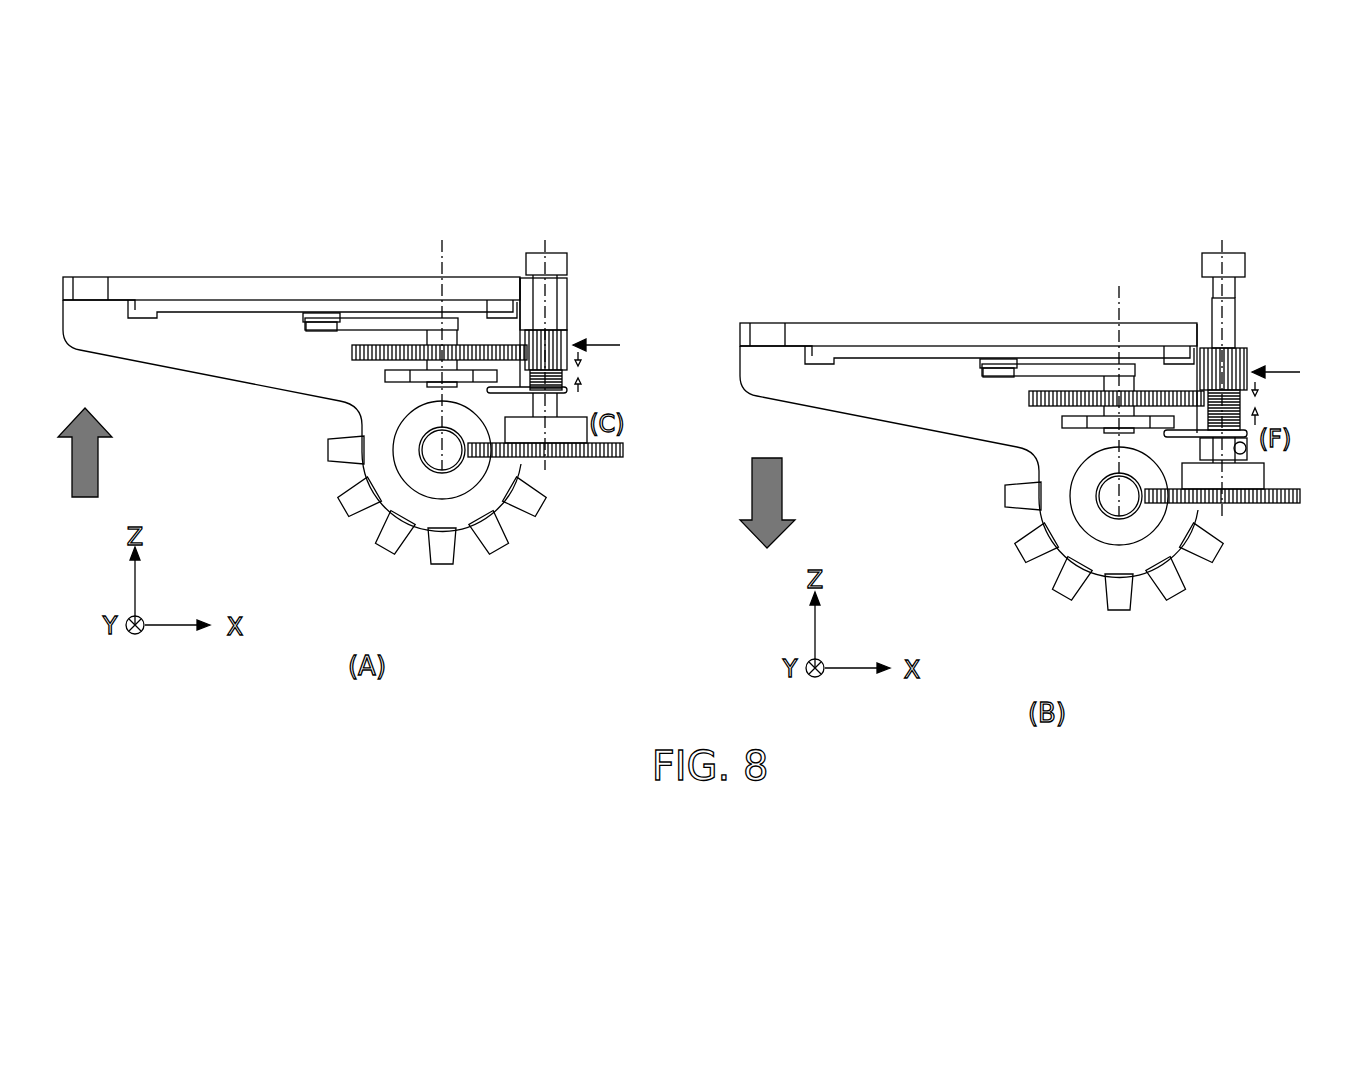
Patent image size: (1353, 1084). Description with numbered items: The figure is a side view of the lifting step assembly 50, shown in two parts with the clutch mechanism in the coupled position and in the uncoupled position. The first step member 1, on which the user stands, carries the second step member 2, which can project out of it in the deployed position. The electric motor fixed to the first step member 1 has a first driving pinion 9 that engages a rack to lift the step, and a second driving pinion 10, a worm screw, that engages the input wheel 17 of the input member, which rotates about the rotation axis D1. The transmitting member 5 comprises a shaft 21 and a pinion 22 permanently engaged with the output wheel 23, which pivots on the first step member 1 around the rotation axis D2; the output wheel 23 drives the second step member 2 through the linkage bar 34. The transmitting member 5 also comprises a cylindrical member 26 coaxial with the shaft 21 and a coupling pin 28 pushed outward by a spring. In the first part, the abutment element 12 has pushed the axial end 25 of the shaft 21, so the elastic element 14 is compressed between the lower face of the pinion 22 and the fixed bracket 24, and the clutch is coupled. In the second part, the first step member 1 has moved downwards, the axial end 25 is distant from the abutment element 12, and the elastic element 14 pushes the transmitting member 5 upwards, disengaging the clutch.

The first step member 1 is at (197, 287).
The second step member 2 is at (292, 303).
The transmitting member 5 is at (947, 362).
The first driving pinion 9 is at (357, 496).
The second driving pinion 10 is at (442, 449).
The abutment element 12 is at (556, 262).
The elastic element 14 is at (578, 386).
The input wheel 17 is at (608, 457).
The shaft 21 is at (549, 315).
The pinion 22 is at (554, 338).
The output wheel 23 is at (353, 358).
The fixed bracket 24 is at (517, 386).
The axial end 25 is at (1229, 300).
The cylindrical member 26 is at (1212, 446).
The coupling pin 28 is at (1247, 449).
The linkage bar 34 is at (365, 326).
The lifting step assembly 50 is at (340, 186).
The rotation axis D1 is at (548, 470).
The rotation axis D2 is at (439, 260).